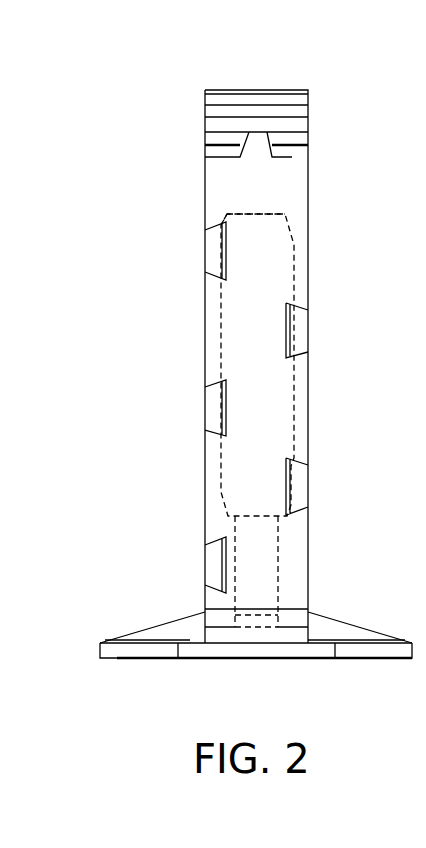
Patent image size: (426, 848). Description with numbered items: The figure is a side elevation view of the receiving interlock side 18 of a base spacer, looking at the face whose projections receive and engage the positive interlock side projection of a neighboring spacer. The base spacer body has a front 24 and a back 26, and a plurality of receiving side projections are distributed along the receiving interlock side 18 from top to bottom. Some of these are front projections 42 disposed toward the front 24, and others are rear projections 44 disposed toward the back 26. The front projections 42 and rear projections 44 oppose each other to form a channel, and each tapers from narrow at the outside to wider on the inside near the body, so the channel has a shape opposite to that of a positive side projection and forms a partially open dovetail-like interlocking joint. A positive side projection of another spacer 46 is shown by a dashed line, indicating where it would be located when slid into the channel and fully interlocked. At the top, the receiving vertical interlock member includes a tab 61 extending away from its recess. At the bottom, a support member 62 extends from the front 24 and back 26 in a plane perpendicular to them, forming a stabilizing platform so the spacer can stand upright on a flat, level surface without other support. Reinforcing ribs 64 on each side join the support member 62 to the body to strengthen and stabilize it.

The receiving interlock side 18 is at (315, 188).
The front 24 is at (318, 387).
The back 26 is at (197, 410).
The front projections 42 is at (303, 327).
The rear projections 44 is at (213, 250).
The positive side projection of another spacer 46 is at (240, 213).
The tab 61 is at (260, 145).
The support member 62 is at (355, 648).
The reinforcing ribs 64 is at (157, 632).